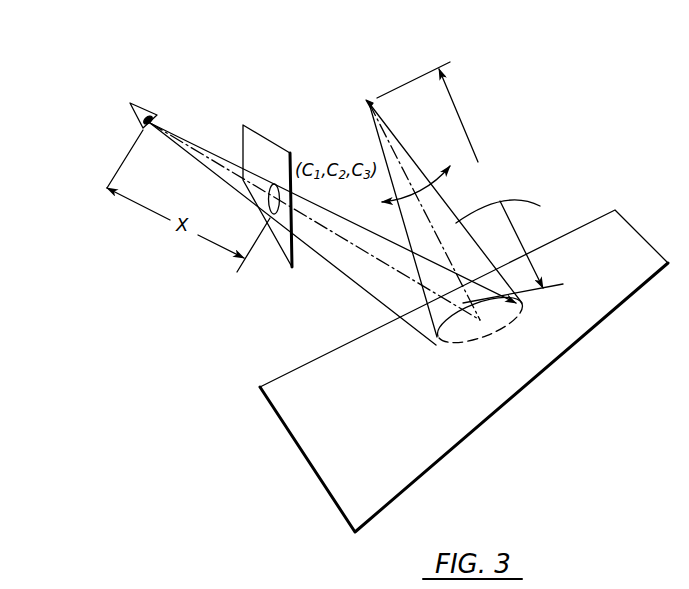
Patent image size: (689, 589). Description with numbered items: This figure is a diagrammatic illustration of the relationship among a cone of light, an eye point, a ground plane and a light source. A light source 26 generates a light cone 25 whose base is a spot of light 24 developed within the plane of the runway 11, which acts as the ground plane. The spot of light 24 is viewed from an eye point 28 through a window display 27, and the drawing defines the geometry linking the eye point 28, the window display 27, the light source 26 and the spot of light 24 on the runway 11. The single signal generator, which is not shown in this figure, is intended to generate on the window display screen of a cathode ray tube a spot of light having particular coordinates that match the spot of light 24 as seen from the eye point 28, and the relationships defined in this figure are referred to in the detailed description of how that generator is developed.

The runway 11 is at (521, 377).
The spot of light 24 is at (458, 352).
The light cone 25 is at (510, 210).
The light source 26 is at (370, 98).
The window display 27 is at (268, 133).
The eye point 28 is at (131, 99).